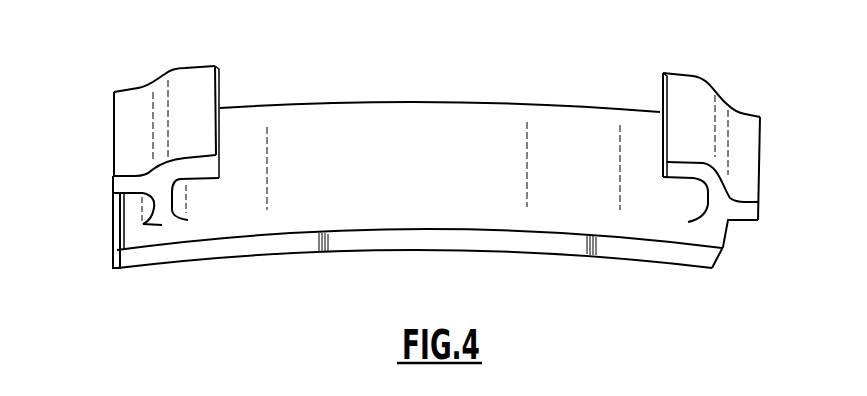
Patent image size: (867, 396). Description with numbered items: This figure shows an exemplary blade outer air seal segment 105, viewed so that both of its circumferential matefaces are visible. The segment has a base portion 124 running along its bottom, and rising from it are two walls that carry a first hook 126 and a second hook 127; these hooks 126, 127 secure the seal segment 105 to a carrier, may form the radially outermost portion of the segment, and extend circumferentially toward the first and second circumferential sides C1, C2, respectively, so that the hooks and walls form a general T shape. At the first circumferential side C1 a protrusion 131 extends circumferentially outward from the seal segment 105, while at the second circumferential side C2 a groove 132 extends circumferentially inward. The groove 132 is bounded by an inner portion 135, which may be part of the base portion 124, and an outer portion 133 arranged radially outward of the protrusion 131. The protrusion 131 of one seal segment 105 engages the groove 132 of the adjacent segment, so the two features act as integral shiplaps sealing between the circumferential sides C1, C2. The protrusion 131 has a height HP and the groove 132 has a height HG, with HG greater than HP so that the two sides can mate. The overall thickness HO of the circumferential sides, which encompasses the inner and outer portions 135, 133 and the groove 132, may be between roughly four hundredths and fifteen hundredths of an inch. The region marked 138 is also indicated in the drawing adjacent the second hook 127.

The seal segment 105 is at (737, 65).
The base portion 124 is at (393, 246).
The first hook 126 is at (685, 85).
The second hook 127 is at (195, 82).
The protrusion 131 is at (742, 198).
The groove 132 is at (153, 207).
The outer portion 133 is at (128, 187).
The inner portion 135 is at (128, 258).
The slot 138 is at (203, 188).
The first circumferential side C1 is at (727, 240).
The second circumferential side C2 is at (113, 268).
The height of the groove HG is at (78, 194).
The thickness of the circumferential sides HO is at (791, 187).
The height of the protrusion HP is at (771, 203).